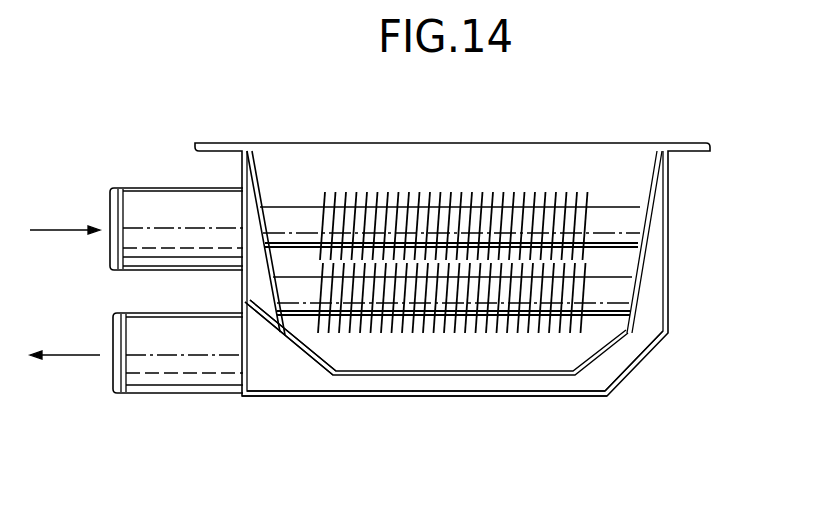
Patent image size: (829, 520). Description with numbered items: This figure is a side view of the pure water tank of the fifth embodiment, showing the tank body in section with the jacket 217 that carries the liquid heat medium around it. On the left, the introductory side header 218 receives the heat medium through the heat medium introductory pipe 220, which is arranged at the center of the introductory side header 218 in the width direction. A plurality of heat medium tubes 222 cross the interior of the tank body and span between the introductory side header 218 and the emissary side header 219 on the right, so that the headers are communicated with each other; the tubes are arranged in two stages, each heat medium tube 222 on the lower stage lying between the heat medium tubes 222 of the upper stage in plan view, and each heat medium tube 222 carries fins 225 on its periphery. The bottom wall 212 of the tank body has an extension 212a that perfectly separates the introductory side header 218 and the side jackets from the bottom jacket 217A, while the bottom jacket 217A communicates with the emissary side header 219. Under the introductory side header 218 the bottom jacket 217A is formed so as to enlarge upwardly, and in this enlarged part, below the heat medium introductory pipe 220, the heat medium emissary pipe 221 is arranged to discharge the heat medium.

The bottom wall 212 is at (436, 390).
The extension of the bottom wall 212a is at (262, 328).
The jacket 217 is at (424, 435).
The bottom jacket 217A is at (373, 385).
The introductory side header 218 is at (243, 283).
The emissary side header 219 is at (653, 273).
The heat medium introductory pipe 220 is at (158, 188).
The heat medium emissary pipe 221 is at (153, 397).
The heat medium tubes 222 is at (620, 203).
The fins 225 is at (555, 322).